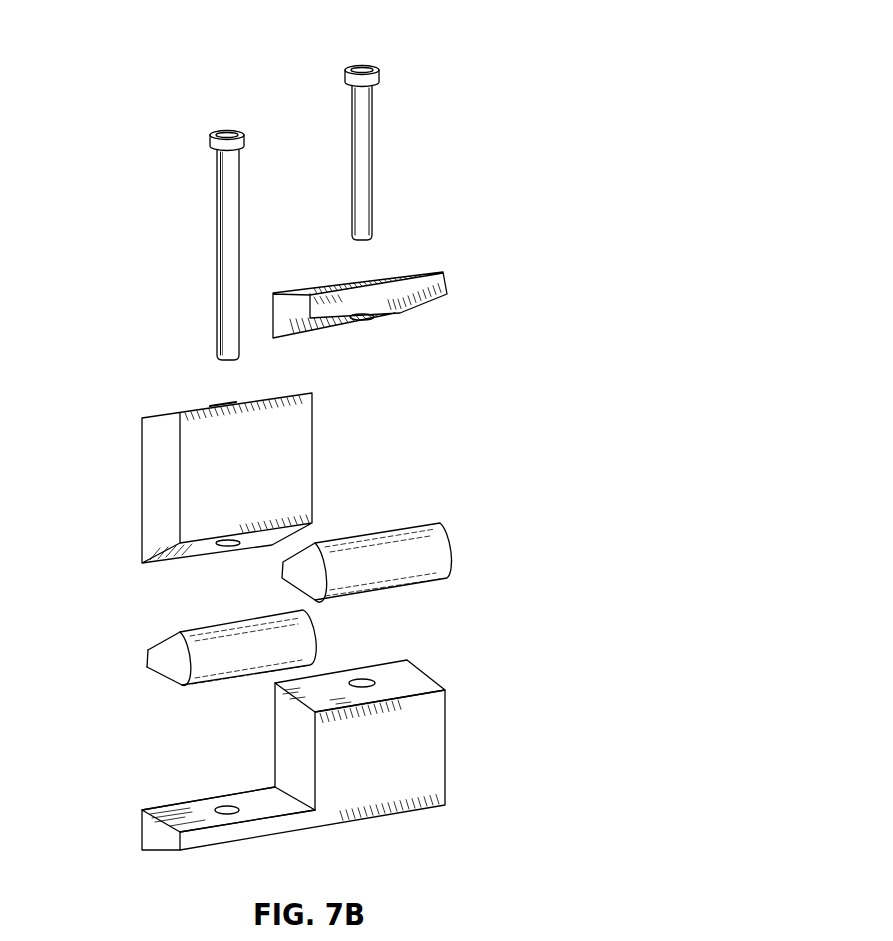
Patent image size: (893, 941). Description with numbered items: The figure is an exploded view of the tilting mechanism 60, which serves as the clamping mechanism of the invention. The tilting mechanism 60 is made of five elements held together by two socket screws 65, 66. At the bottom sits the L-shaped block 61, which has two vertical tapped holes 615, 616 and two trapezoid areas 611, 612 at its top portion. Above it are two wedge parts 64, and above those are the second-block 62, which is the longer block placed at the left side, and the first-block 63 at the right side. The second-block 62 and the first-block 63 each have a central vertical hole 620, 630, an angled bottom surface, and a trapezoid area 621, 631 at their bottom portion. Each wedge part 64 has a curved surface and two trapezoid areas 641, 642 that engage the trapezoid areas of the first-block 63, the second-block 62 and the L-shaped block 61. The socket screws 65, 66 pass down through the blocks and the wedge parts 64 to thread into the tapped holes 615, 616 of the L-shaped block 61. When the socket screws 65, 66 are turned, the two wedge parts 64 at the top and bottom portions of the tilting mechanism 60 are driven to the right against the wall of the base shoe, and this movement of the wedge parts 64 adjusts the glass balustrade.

The tilting mechanism 60 is at (470, 165).
The L-shaped block 61 is at (420, 737).
The trapezoid area 611 is at (410, 674).
The trapezoid area 612 is at (163, 805).
The vertical tapped hole 615 is at (362, 680).
The vertical tapped hole 616 is at (228, 806).
The second-block 62 is at (290, 445).
The central vertical hole 620 is at (227, 397).
The trapezoid area 621 is at (198, 550).
The first-block 63 is at (447, 290).
The central vertical hole 630 is at (363, 320).
The trapezoid area 631 is at (397, 310).
The wedge part 64 is at (425, 553).
The trapezoid area 641 is at (163, 690).
The trapezoid area 642 is at (148, 640).
The socket screw 65 is at (352, 185).
The socket screw 66 is at (228, 243).